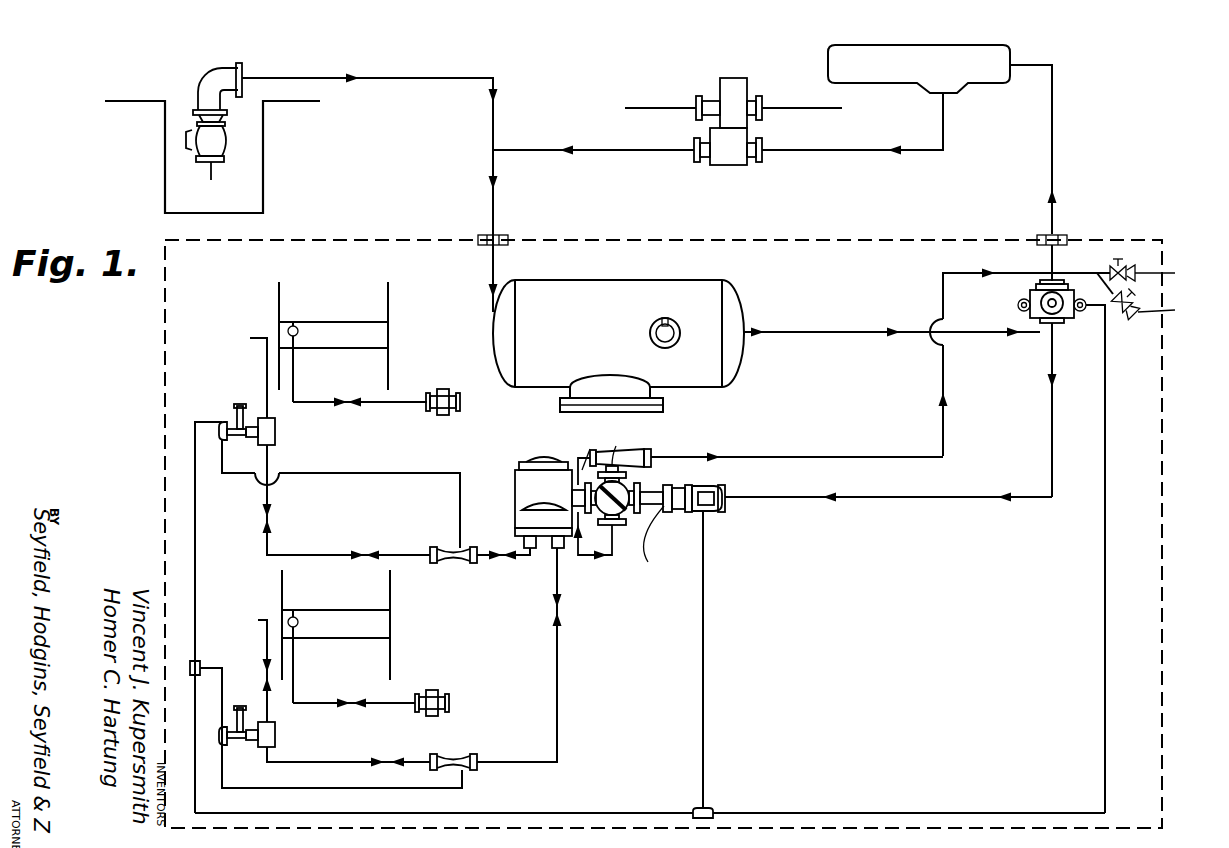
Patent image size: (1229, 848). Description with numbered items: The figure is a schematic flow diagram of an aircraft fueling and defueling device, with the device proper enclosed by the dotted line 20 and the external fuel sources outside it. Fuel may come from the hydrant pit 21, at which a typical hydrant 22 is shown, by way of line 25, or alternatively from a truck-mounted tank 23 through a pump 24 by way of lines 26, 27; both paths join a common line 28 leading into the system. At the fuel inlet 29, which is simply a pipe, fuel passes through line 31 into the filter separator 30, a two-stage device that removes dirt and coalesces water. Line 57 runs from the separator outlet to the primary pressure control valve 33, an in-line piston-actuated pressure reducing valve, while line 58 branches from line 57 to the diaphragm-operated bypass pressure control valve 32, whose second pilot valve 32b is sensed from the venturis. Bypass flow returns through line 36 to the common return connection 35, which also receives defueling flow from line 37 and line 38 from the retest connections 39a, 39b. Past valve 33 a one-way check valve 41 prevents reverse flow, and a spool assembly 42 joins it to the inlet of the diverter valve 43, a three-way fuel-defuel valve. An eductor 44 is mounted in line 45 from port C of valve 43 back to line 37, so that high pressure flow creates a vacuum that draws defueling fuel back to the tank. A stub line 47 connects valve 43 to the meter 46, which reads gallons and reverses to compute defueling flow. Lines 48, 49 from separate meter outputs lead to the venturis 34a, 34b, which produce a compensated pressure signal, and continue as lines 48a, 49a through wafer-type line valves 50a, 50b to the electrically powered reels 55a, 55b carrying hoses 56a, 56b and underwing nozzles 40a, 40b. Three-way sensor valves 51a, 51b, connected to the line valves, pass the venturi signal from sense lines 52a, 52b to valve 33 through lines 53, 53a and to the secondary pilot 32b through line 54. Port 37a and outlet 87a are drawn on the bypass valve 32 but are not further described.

The dotted line 20 is at (1165, 240).
The hydrant pit 21 is at (263, 183).
The hydrant 22 is at (214, 138).
The tank 23 is at (992, 72).
The pump 24 is at (708, 168).
The line 25 is at (411, 78).
The line 26 is at (852, 148).
The line 27 is at (622, 148).
The common line 28 is at (496, 200).
The fuel inlet 29 is at (485, 236).
The filter separator 30 is at (537, 380).
The line 31 is at (496, 258).
The bypass pressure control valve 32 is at (1060, 314).
The second pilot valve 32b is at (1090, 308).
The primary pressure control valve 33 is at (712, 512).
The venturi 34a is at (452, 563).
The venturi 34b is at (456, 756).
The common return line connection 35 is at (1058, 230).
The line 36 is at (1040, 272).
The line 37 is at (935, 268).
The valve inlet port 37a is at (1018, 305).
The line 38 is at (1096, 272).
The retest connection 39a is at (1162, 271).
The retest connection 39b is at (1163, 303).
The nozzle 40a is at (450, 390).
The nozzle 40b is at (450, 684).
The one-way check valve 41 is at (678, 512).
The spool assembly 42 is at (645, 504).
The diverter valve 43 is at (652, 496).
The eductor 44 is at (640, 457).
The line 45 is at (586, 556).
The meter 46 is at (534, 462).
The stub line 47 is at (585, 470).
The line 48 is at (528, 557).
The line 48a is at (330, 555).
The line 49 is at (559, 690).
The line 49a is at (355, 762).
The line valve 50a is at (276, 432).
The line valve 50b is at (276, 733).
The sensor valve 51a is at (238, 410).
The sensor valve 51b is at (238, 708).
The sense line 52a is at (366, 473).
The sense line 52b is at (325, 788).
The line 53 is at (530, 813).
The line 53a is at (706, 628).
The line 54 is at (835, 813).
The reel 55a is at (340, 330).
The reel 55b is at (340, 614).
The hose 56a is at (318, 396).
The hose 56b is at (316, 698).
The line 57 is at (798, 333).
The line 58 is at (1040, 325).
The valve outlet 87a is at (1052, 336).